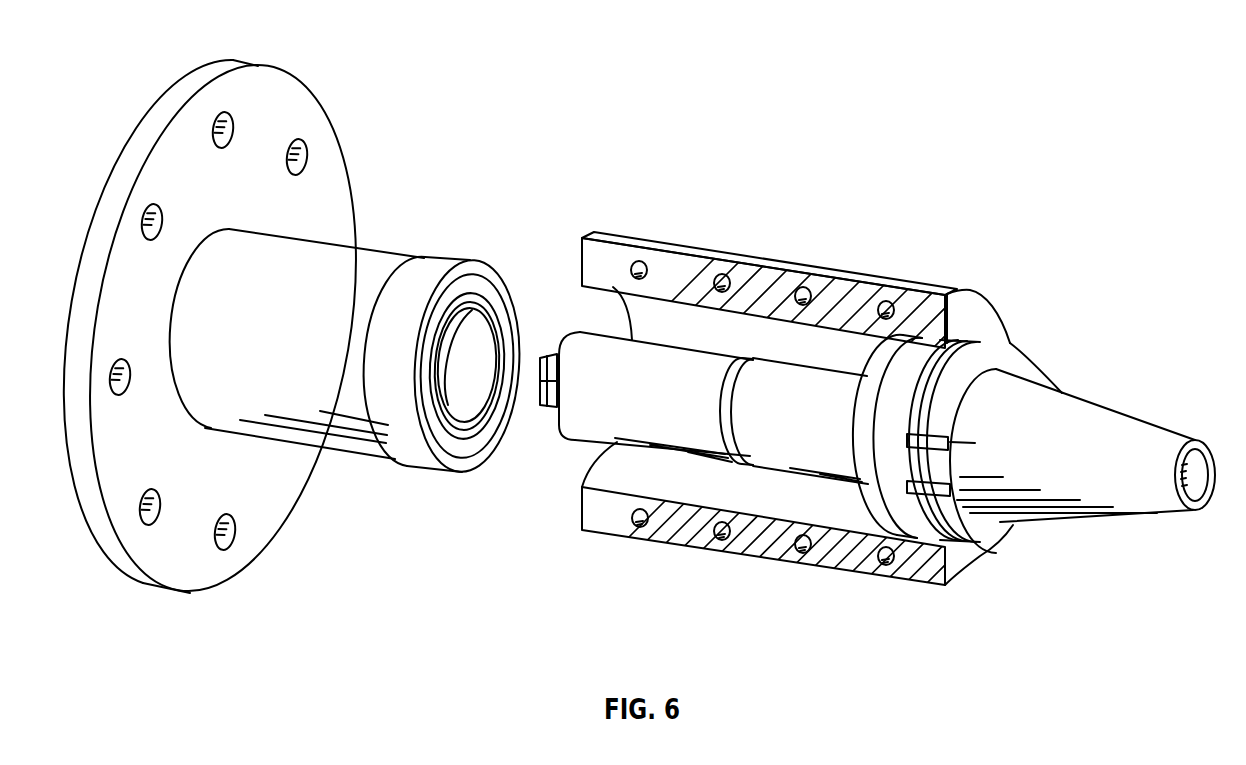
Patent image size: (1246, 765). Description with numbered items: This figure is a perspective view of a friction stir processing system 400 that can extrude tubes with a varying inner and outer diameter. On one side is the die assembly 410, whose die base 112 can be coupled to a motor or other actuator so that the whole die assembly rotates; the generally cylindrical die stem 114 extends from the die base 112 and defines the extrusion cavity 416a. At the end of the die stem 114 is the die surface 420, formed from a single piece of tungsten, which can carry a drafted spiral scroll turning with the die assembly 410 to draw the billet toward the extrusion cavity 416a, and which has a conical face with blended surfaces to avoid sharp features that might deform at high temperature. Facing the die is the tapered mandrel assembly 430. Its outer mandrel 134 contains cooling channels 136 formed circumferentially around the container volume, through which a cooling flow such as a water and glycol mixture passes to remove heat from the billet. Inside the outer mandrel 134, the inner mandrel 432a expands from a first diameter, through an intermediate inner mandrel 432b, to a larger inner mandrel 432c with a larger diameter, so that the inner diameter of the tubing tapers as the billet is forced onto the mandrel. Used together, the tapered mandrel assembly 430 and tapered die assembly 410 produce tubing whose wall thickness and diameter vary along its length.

The friction stir processing system 400 is at (1126, 141).
The die base 112 is at (262, 79).
The die assembly 410 is at (320, 447).
The die stem 114 is at (373, 458).
The die surface 420 is at (453, 286).
The extrusion cavity 416a is at (482, 332).
The outer mandrel 134 is at (760, 282).
The cooling channels 136 is at (634, 270).
The inner mandrel 432c is at (633, 428).
The intermediate inner mandrel 432b is at (765, 455).
The inner mandrel 432a is at (820, 462).
The mandrel assembly 430 is at (932, 574).